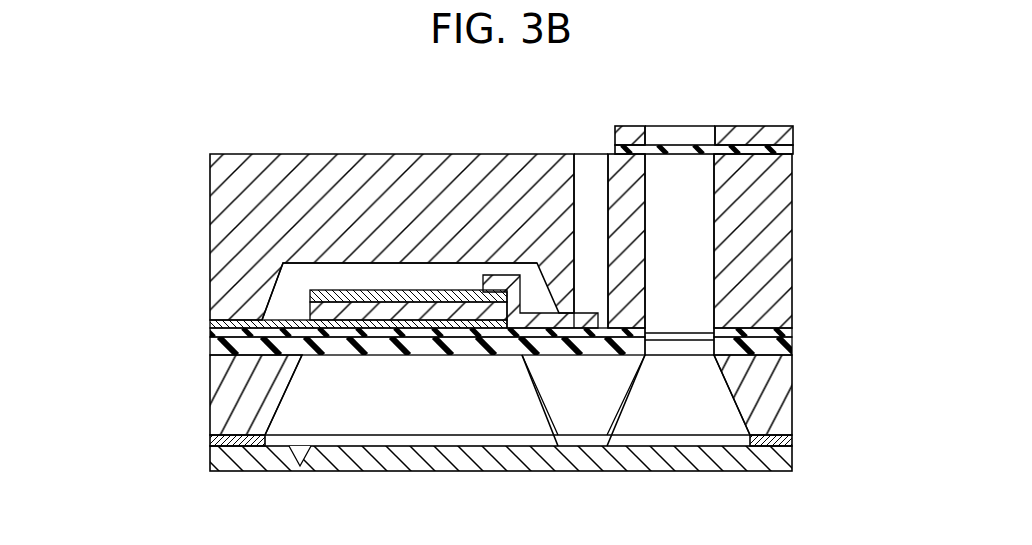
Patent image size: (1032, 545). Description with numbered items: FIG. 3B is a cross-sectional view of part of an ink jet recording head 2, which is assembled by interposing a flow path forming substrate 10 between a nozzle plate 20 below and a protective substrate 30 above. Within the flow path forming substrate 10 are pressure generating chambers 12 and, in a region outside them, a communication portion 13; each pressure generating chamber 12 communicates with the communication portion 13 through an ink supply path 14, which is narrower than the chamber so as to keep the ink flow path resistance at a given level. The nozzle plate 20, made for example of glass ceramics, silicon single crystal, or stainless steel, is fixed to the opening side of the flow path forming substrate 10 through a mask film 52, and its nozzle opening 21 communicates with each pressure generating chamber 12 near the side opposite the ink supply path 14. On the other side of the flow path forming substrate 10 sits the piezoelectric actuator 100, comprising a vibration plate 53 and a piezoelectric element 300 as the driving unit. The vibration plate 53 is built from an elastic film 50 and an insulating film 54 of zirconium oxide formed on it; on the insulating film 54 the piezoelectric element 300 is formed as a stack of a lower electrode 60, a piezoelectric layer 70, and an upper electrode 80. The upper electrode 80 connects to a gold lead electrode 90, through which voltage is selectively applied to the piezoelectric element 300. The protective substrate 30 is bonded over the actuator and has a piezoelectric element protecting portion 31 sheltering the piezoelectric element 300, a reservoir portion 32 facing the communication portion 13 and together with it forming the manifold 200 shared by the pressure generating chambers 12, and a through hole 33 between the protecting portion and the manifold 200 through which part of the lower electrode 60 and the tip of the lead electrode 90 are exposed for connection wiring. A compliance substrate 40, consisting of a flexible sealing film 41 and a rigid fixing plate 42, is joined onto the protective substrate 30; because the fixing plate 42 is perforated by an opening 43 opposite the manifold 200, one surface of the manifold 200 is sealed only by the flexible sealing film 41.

The ink jet recording head 2 is at (763, 82).
The flow path forming substrate 10 is at (217, 385).
The pressure generating chamber 12 is at (443, 410).
The communication portion 13 is at (698, 388).
The ink supply path 14 is at (582, 400).
The nozzle plate 20 is at (787, 462).
The nozzle opening 21 is at (298, 468).
The protective substrate 30 is at (793, 222).
The piezoelectric element protecting portion 31 is at (305, 270).
The reservoir portion 32 is at (698, 293).
The through hole 33 is at (605, 177).
The compliance substrate 40 is at (850, 85).
The sealing film 41 is at (793, 152).
The fixing plate 42 is at (793, 128).
The opening 43 is at (712, 140).
The elastic film 50 is at (215, 345).
The mask film 52 is at (215, 440).
The vibration plate 53 is at (137, 298).
The insulating film 54 is at (210, 333).
The lower electrode 60 is at (210, 327).
The piezoelectric layer 70 is at (365, 312).
The upper electrode 80 is at (443, 297).
The lead electrode 90 is at (505, 283).
The piezoelectric actuator 100 is at (95, 230).
The manifold 200 is at (850, 410).
The piezoelectric element 300 is at (302, 312).